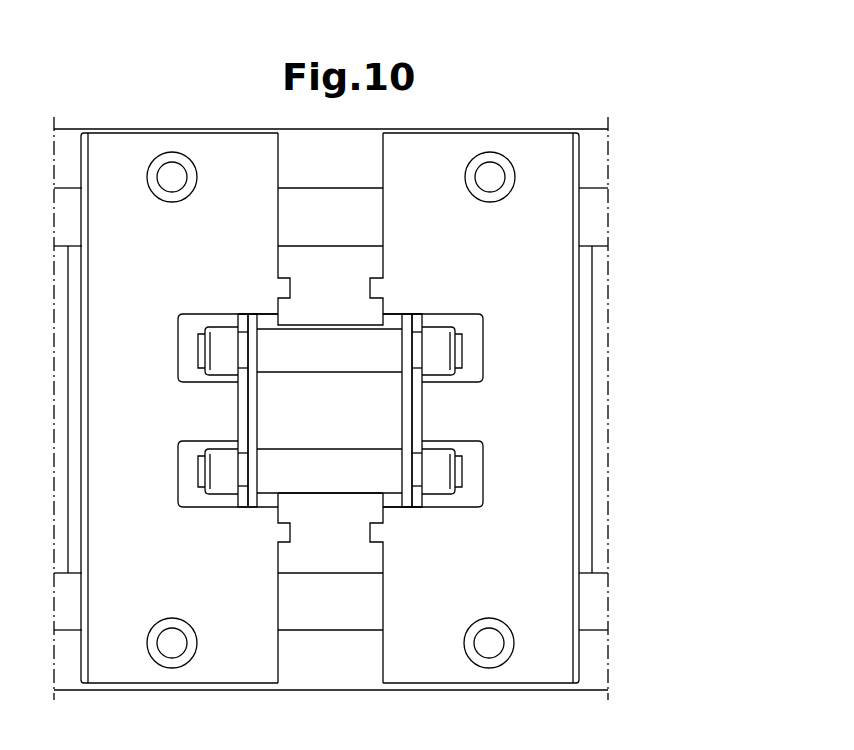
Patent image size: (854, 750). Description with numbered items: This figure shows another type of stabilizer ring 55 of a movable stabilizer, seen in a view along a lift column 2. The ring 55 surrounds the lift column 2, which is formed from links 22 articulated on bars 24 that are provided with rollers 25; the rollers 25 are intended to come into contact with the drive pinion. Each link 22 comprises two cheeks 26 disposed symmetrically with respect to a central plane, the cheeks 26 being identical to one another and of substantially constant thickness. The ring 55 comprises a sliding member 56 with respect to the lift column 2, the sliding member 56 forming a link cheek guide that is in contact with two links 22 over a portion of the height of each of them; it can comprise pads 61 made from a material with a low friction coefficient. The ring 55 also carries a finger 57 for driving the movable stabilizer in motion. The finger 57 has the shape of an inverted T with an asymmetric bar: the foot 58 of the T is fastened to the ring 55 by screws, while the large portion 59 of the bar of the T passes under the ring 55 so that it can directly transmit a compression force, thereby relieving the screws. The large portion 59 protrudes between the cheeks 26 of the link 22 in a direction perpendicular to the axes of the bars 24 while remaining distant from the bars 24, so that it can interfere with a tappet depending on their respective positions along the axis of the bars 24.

The lift column 2 is at (465, 326).
The link 22 is at (405, 323).
The bar 24 is at (350, 363).
The roller 25 is at (213, 342).
The cheek 26 is at (253, 500).
The ring 55 is at (618, 430).
The sliding member 56 is at (593, 368).
The finger 57 is at (385, 585).
The foot 58 is at (292, 597).
The large portion 59 is at (288, 503).
The pad 61 is at (247, 313).